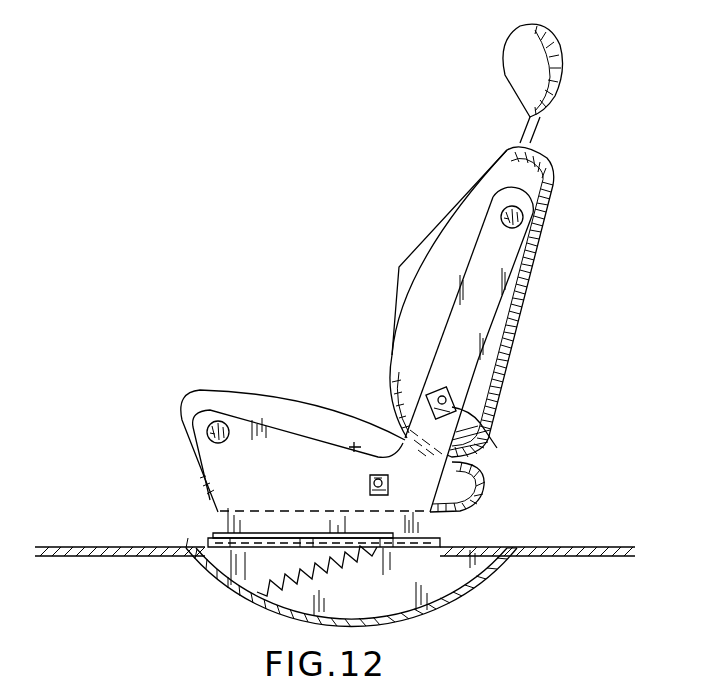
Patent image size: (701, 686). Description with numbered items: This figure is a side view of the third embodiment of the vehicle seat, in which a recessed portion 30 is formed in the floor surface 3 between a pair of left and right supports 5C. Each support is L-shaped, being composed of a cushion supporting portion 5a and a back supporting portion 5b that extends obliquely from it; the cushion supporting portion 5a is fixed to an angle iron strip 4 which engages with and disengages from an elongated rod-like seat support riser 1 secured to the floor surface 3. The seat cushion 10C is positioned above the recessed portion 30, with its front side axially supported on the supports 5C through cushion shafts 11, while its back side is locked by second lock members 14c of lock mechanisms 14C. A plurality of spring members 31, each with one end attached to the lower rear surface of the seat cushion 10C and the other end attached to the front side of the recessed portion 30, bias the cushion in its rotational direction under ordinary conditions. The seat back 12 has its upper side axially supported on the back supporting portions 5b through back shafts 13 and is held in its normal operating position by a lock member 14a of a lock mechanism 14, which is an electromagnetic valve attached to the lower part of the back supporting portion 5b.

The seat back 12 is at (550, 168).
The back shafts 13 is at (522, 219).
The back supporting portion 5b is at (492, 310).
The lock mechanism 14 is at (449, 390).
The lock member 14a is at (497, 436).
The second lock member 14c is at (390, 483).
The lock mechanism 14C is at (368, 484).
The support 5C is at (354, 457).
The seat cushion 10C is at (283, 395).
The cushion shafts 11 is at (206, 430).
The cushion supporting portion 5a is at (220, 467).
The seat support riser 1 is at (210, 535).
The angle iron strip 4 is at (278, 532).
The floor surface 3 is at (585, 547).
The recessed portion 30 is at (447, 592).
The spring members 31 is at (337, 573).